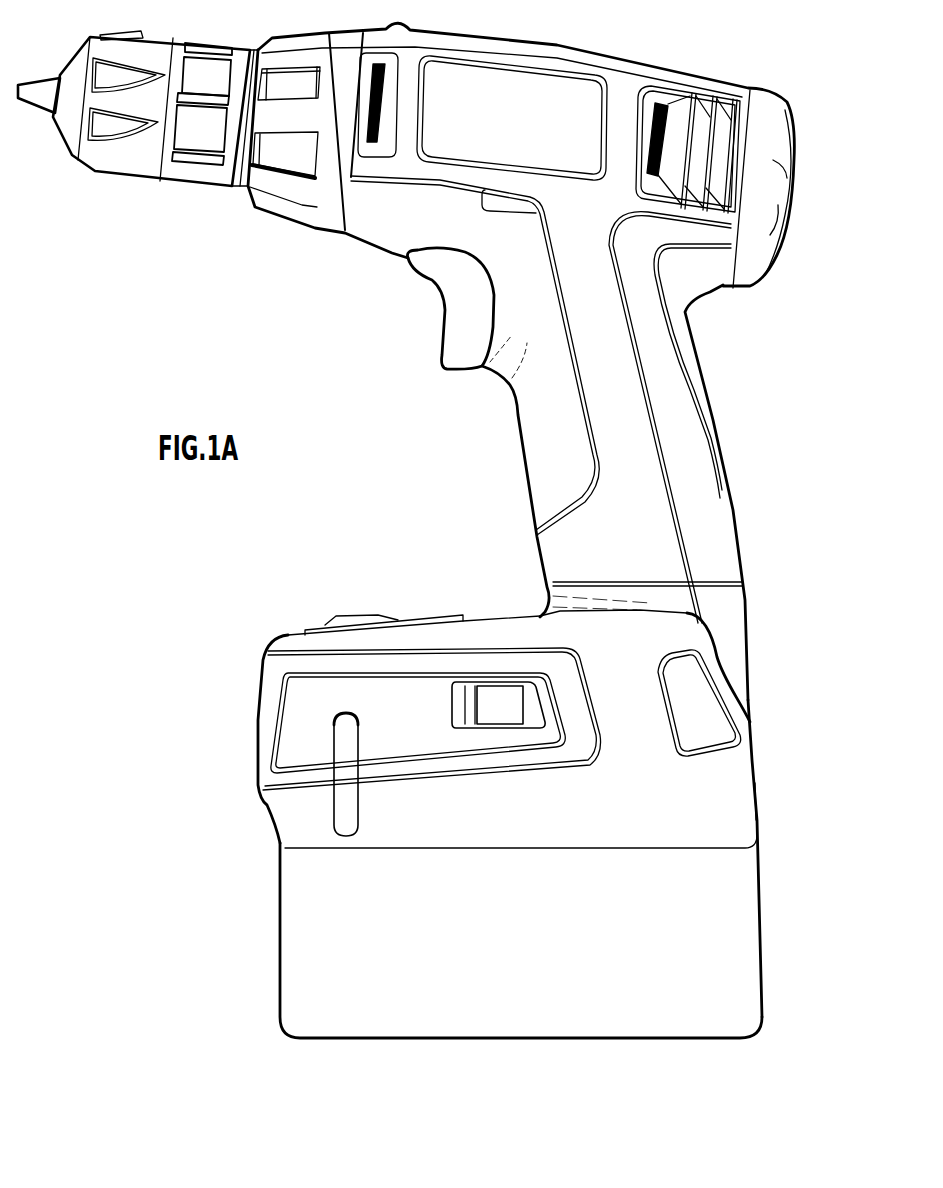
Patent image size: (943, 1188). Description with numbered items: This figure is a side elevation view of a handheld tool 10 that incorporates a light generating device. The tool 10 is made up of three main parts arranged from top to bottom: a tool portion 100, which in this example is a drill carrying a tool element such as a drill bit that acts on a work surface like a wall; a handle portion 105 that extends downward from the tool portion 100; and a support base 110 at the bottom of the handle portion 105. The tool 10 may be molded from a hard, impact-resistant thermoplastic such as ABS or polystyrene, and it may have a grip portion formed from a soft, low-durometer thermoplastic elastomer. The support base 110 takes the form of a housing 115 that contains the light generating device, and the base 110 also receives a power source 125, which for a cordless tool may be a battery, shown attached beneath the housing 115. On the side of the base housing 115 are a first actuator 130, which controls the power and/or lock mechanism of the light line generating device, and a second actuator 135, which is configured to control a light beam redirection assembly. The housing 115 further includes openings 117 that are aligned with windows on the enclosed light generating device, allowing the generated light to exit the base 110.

The tool 10 is at (170, 238).
The tool portion 100 is at (683, 65).
The handle portion 105 is at (743, 543).
The support base 110 is at (767, 762).
The housing 115 is at (277, 727).
The openings 117 is at (343, 772).
The power source 125 is at (770, 930).
The first actuator 130 is at (490, 702).
The second actuator 135 is at (355, 614).